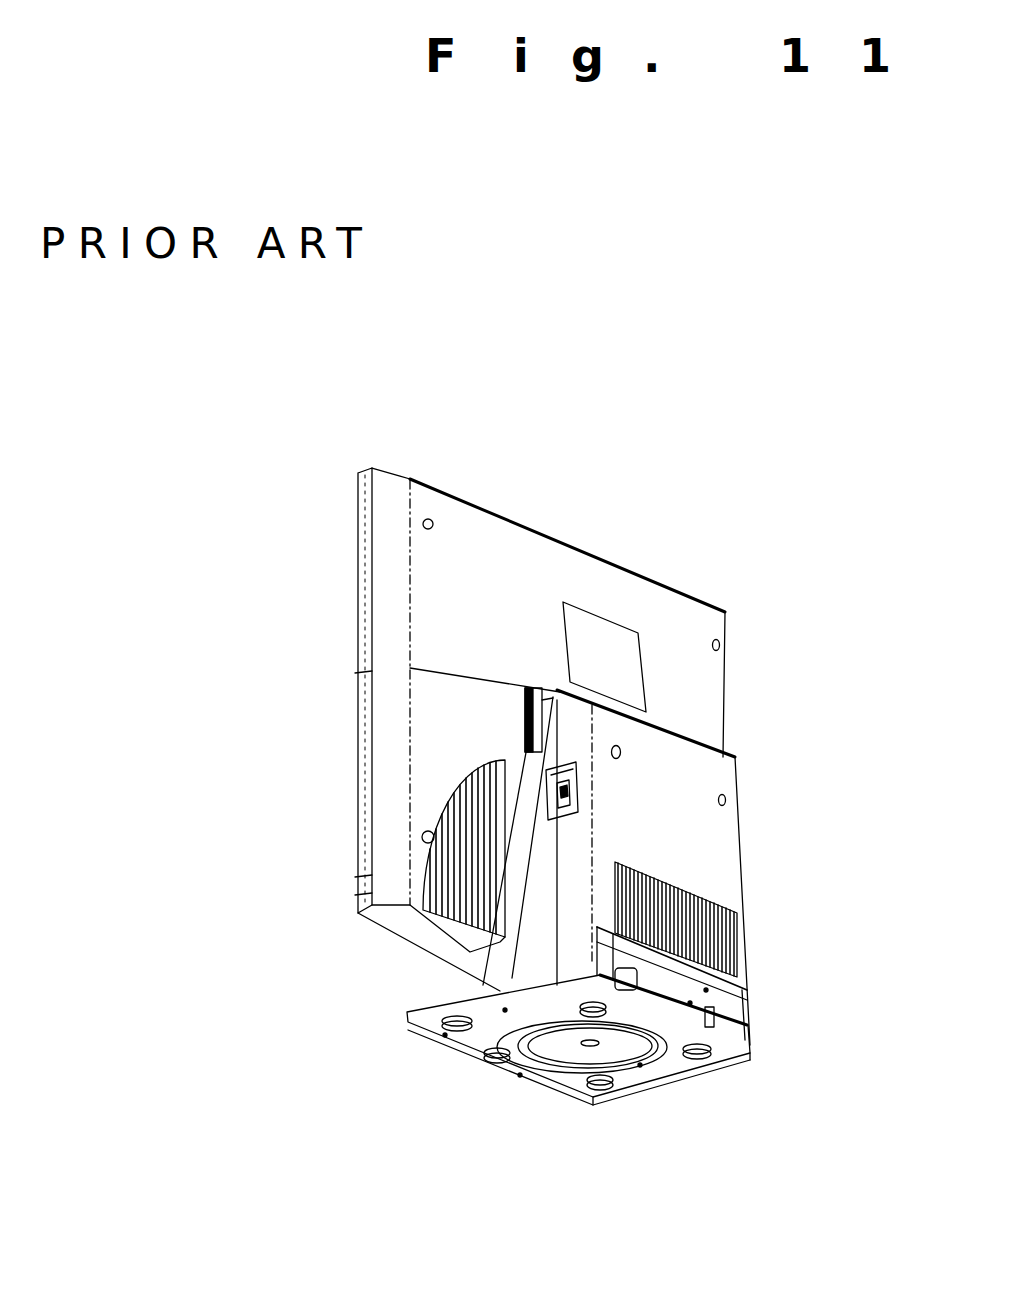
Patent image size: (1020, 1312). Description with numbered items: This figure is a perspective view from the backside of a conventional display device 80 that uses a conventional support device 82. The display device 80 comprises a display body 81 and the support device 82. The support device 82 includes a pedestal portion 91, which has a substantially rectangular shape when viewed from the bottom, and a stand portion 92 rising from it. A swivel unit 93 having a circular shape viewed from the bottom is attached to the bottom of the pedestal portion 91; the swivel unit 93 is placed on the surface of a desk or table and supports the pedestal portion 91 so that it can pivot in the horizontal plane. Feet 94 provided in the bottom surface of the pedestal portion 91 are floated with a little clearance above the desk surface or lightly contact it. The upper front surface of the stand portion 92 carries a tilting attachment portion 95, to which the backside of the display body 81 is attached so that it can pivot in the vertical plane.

The display device 80 is at (640, 260).
The display body 81 is at (700, 627).
The support device 82 is at (748, 968).
The pedestal portion 91 is at (437, 1008).
The stand portion 92 is at (725, 843).
The swivel unit 93 is at (547, 1057).
The feet 94 is at (447, 1025).
The tilting attachment portion 95 is at (542, 692).